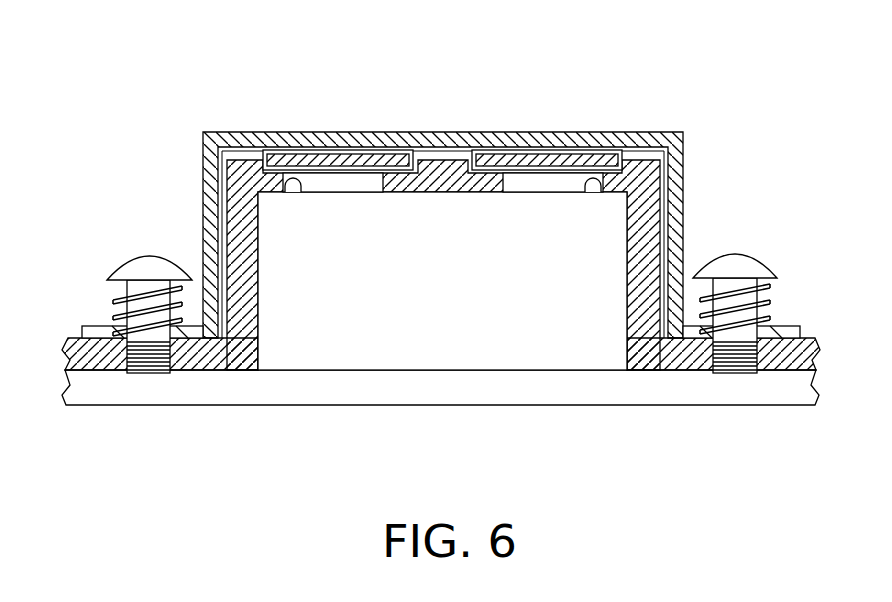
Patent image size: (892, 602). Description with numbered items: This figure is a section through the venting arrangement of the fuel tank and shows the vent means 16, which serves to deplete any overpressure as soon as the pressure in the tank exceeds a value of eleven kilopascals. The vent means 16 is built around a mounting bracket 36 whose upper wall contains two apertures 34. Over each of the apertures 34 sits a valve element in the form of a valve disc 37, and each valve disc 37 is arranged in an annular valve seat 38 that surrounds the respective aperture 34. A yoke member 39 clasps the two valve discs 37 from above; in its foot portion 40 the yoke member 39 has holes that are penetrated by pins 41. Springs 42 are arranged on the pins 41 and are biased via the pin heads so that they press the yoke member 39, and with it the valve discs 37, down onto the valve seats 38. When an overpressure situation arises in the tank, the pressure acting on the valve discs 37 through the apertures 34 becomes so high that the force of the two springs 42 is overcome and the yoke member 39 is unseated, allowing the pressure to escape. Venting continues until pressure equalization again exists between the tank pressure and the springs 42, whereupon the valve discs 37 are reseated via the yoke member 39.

The vent means 16 is at (442, 252).
The apertures 34 is at (302, 192).
The mounting bracket 36 is at (443, 265).
The valve discs 37 is at (350, 175).
The annular valve seat 38 is at (414, 152).
The yoke member 39 is at (203, 167).
The foot portion 40 is at (90, 325).
The pins 41 is at (150, 375).
The springs 42 is at (108, 292).